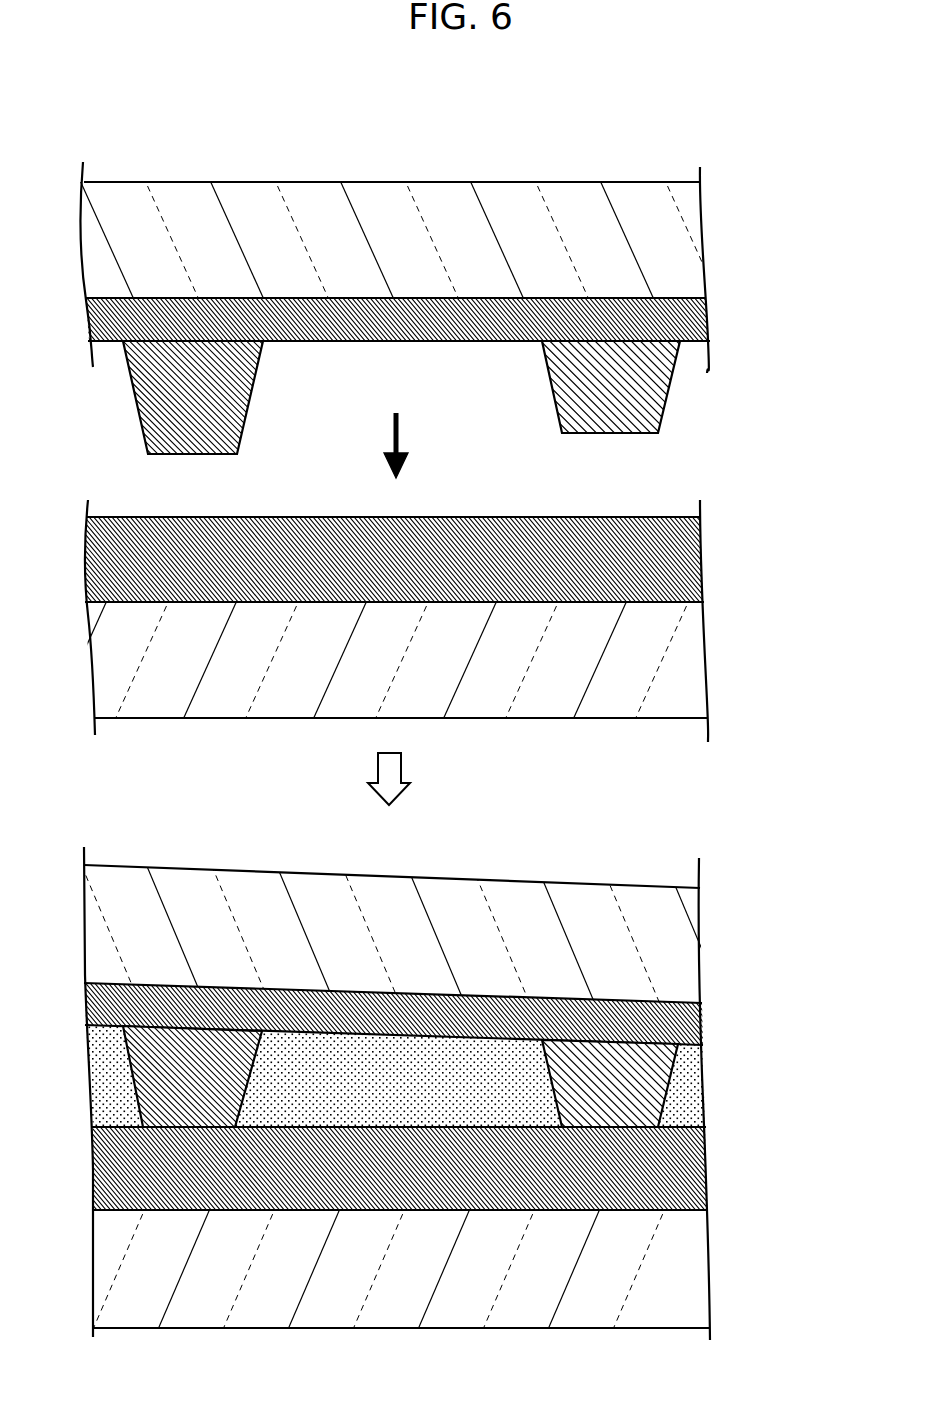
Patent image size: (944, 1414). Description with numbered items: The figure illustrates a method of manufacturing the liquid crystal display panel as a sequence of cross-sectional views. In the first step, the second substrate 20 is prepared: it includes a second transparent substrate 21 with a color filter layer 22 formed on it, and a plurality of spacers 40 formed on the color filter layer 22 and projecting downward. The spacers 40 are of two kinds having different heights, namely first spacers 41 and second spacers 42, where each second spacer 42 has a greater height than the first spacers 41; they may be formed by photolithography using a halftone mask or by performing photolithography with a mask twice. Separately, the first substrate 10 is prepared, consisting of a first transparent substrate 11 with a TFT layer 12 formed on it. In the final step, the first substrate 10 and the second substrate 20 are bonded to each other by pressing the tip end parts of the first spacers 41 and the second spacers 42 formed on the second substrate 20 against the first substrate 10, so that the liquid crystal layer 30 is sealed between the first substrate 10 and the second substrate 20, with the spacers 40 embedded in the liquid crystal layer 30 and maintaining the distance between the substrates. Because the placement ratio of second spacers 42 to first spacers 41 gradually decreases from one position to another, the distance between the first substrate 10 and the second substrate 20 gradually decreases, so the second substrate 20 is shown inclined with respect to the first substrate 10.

The first substrate 10 is at (427, 864).
The first transparent substrate 11 is at (399, 965).
The TFT layer 12 is at (680, 567).
The second substrate 20 is at (451, 667).
The second transparent substrate 21 is at (677, 250).
The color filter layer 22 is at (768, 220).
The liquid crystal layer 30 is at (375, 1093).
The spacers 40 is at (401, 627).
The first spacers 41 is at (588, 363).
The second spacers 42 is at (220, 370).